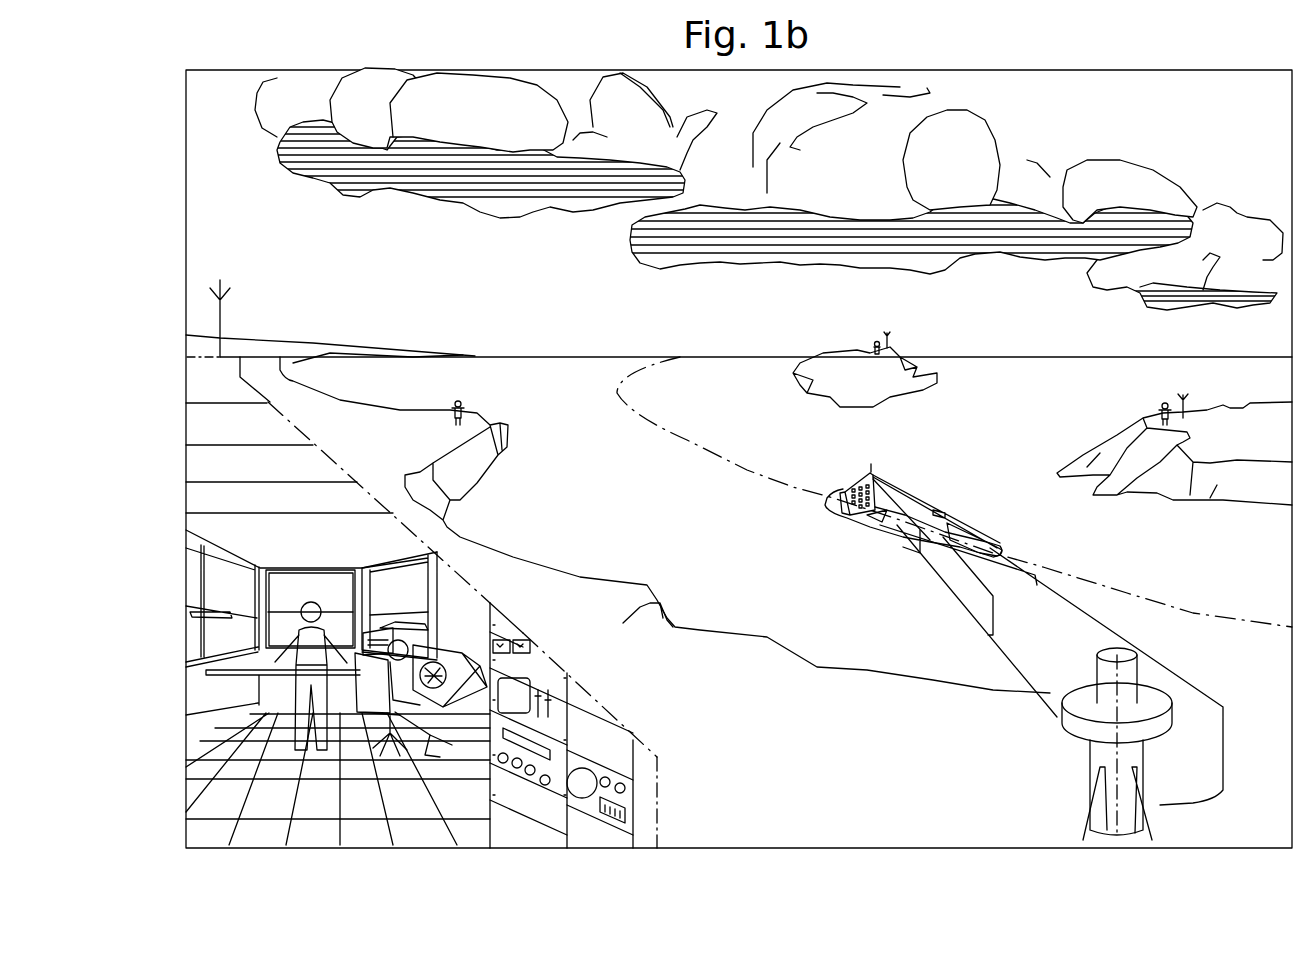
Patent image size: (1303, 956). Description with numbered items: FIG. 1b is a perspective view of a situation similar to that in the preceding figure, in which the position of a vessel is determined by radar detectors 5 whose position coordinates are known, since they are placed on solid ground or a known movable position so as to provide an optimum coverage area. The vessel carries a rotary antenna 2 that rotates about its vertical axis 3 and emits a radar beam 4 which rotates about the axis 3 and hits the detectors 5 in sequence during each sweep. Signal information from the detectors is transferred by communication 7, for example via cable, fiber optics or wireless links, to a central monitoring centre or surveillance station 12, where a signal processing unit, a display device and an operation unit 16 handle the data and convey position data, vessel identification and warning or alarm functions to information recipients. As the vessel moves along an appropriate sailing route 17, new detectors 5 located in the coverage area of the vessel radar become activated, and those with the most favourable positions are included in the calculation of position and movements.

The rotary antenna 2 is at (875, 477).
The vertical axis 3 is at (863, 472).
The radar beam 4 is at (1003, 577).
The detectors 5 is at (467, 407).
The communication 7 is at (850, 485).
The surveillance station 12 is at (489, 604).
The operation unit 16 is at (377, 682).
The sailing route 17 is at (683, 437).